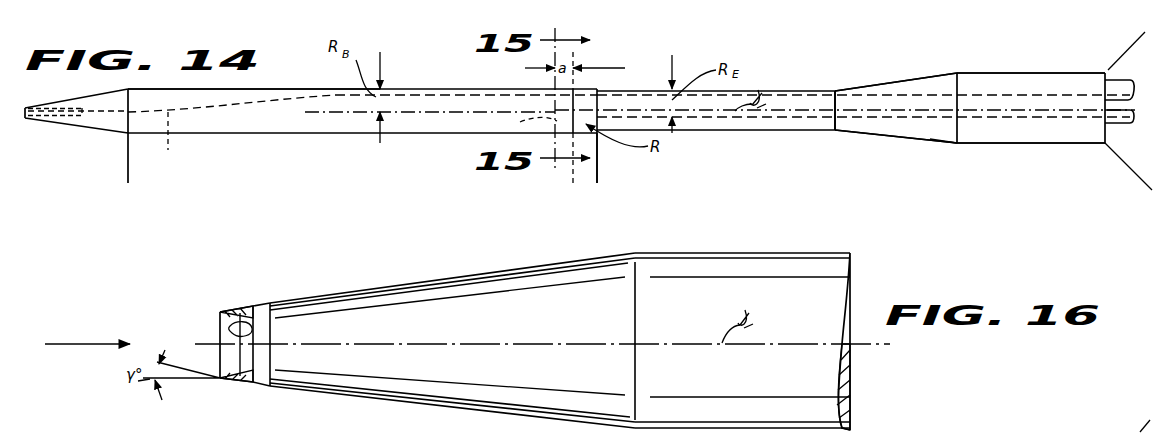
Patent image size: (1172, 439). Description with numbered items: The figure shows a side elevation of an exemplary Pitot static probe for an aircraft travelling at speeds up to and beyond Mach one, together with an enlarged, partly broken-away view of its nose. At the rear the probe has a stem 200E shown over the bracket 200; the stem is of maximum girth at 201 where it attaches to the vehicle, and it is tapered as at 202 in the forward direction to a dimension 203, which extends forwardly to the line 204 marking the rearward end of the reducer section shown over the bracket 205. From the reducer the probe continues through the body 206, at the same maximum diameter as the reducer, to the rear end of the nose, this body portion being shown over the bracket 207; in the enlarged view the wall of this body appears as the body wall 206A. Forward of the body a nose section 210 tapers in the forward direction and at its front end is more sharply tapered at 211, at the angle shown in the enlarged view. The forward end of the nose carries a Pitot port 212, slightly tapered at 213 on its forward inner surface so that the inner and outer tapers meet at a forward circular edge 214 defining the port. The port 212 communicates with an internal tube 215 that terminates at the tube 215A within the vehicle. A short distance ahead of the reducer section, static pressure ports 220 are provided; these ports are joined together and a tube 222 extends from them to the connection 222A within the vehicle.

In FIG. 14, the bracket 200 is at (1105, 150).
In FIG. 14, the stem 200E is at (934, 145).
In FIG. 14, the maximum girth 201 is at (1008, 73).
In FIG. 14, the taper 202 is at (904, 84).
In FIG. 14, the dimension 203 is at (814, 91).
In FIG. 14, the line 204 is at (597, 170).
In FIG. 14, the bracket 205 is at (597, 183).
In FIG. 14, the body 206 is at (335, 126).
In FIG. 16, the forward body wall 206A is at (560, 346).
In FIG. 14, the bracket 207 is at (565, 183).
In FIG. 14, the nose section 210 is at (116, 125).
In FIG. 16, the sharply tapered front end 211 is at (262, 303).
In FIG. 16, the Pitot port 212 is at (243, 368).
In FIG. 16, the taper 213 is at (242, 330).
In FIG. 16, the forward circular edge 214 is at (220, 316).
In FIG. 14, the internal tube 215 is at (168, 150).
In FIG. 14, the tube 215A is at (1133, 80).
In FIG. 16, the tube 215A is at (1126, 438).
In FIG. 14, the static pressure ports 220 is at (540, 128).
In FIG. 14, the tube 222 is at (720, 118).
In FIG. 14, the connection 222A is at (1133, 125).